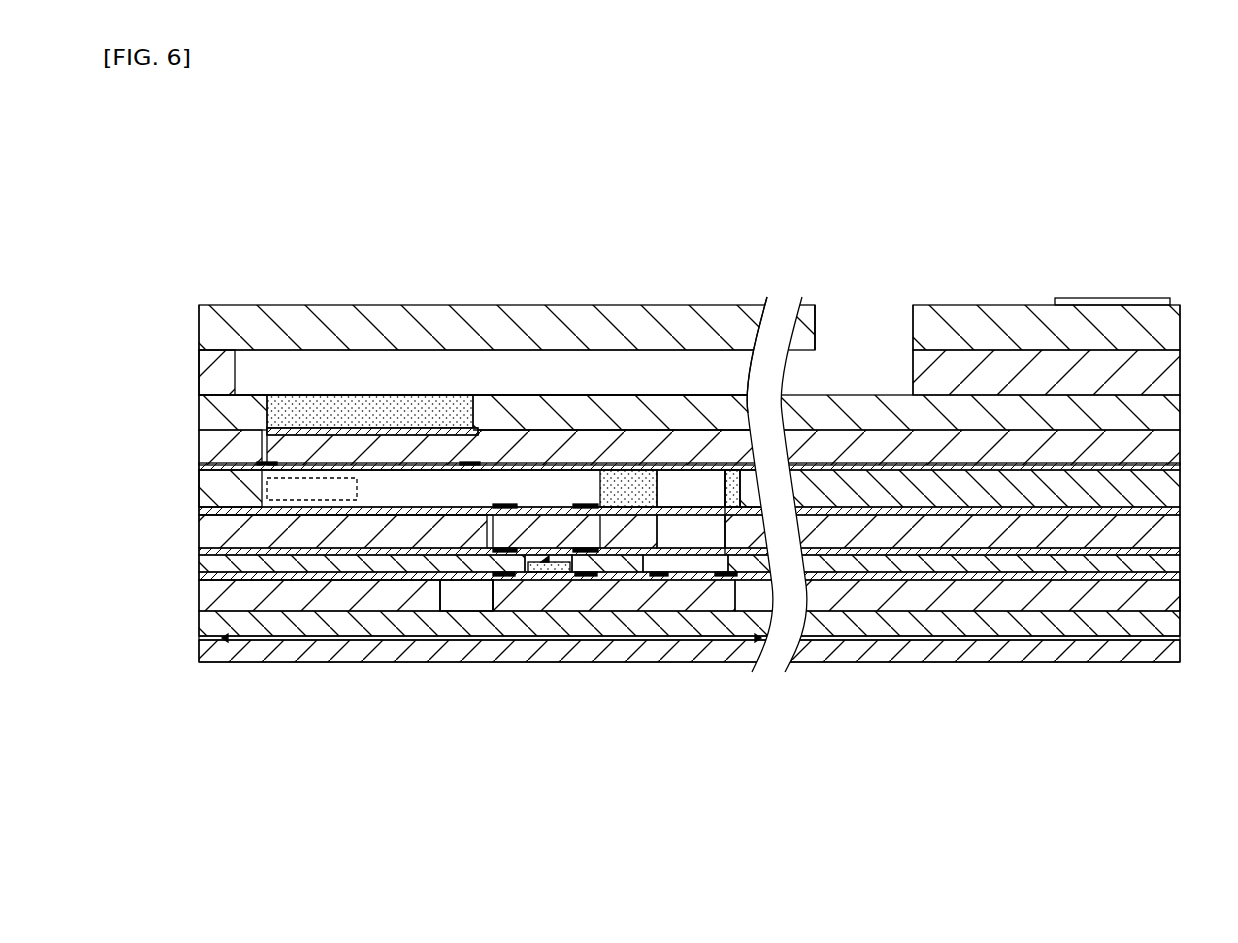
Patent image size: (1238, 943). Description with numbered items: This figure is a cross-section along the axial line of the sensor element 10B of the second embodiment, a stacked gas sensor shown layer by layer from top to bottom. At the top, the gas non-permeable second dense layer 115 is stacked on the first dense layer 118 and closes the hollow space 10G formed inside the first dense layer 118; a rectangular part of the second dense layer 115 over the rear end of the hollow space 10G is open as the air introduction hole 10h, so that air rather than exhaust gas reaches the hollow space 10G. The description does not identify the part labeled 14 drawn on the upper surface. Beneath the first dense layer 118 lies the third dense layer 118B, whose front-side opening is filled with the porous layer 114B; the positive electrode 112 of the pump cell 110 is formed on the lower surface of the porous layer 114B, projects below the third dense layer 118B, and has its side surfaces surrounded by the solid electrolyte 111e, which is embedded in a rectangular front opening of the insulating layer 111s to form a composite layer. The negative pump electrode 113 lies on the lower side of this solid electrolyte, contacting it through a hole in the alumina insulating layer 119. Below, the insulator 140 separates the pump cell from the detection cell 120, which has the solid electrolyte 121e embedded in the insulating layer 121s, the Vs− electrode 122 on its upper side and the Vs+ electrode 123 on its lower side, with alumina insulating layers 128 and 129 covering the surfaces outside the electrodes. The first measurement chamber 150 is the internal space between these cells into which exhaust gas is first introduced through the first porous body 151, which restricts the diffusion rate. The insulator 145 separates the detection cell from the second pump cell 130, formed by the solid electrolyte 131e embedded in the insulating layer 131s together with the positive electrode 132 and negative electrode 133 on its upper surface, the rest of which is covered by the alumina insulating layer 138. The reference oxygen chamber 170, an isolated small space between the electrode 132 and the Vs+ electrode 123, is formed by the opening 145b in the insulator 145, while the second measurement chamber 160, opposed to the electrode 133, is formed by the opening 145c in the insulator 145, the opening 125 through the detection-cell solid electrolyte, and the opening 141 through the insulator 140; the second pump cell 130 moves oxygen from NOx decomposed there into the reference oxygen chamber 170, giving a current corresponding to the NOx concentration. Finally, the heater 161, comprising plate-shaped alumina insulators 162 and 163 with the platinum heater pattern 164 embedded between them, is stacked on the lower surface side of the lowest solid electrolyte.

The sensor element 10B is at (760, 192).
The hollow space 10G is at (590, 378).
The air introduction hole 10h is at (859, 292).
The pad 14 is at (1100, 298).
The Ip1 cell 110 is at (138, 413).
The solid electrolyte 111e is at (337, 430).
The insulating layer 111s is at (212, 446).
The Ip1+ electrode 112 is at (262, 412).
The Ip1− electrode 113 is at (212, 466).
The porous layer 114B is at (381, 405).
The second dense layer 115 is at (205, 325).
The first dense layer 118 is at (205, 361).
The third dense layer 118B is at (266, 403).
The alumina insulating layer 119 is at (545, 463).
The Vs cell 120 is at (212, 530).
The solid electrolyte 121e is at (588, 505).
The insulating layer 121s is at (281, 527).
The Vs− electrode 122 is at (517, 497).
The Vs+ electrode 123 is at (560, 551).
The opening 125 is at (722, 535).
The alumina insulating layer 128 is at (212, 510).
The alumina insulating layer 129 is at (212, 551).
The Ip2 cell 130 is at (212, 590).
The solid electrolyte 131e is at (530, 580).
The insulating layer 131s is at (258, 587).
The Ip2+ electrode 132 is at (565, 563).
The Ip2− electrode 133 is at (718, 578).
The alumina insulating layer 138 is at (1180, 590).
The insulator 140 is at (1180, 493).
The opening 141 is at (717, 483).
The insulator 145 is at (212, 568).
The opening 145b is at (574, 578).
The opening 145c is at (656, 578).
The first measurement chamber 150 is at (404, 498).
The first porous body 151 is at (255, 487).
The second measurement chamber 160 is at (677, 498).
The heater 161 is at (138, 604).
The insulator 162 is at (212, 616).
The insulator 163 is at (225, 651).
The heater pattern 164 is at (225, 638).
The reference oxygen chamber 170 is at (525, 578).